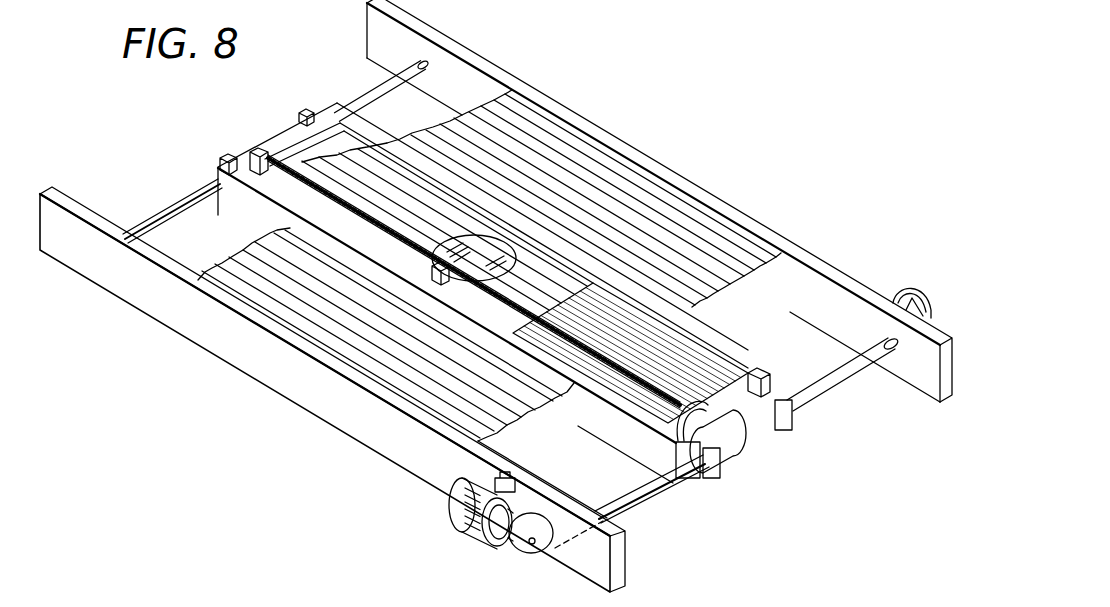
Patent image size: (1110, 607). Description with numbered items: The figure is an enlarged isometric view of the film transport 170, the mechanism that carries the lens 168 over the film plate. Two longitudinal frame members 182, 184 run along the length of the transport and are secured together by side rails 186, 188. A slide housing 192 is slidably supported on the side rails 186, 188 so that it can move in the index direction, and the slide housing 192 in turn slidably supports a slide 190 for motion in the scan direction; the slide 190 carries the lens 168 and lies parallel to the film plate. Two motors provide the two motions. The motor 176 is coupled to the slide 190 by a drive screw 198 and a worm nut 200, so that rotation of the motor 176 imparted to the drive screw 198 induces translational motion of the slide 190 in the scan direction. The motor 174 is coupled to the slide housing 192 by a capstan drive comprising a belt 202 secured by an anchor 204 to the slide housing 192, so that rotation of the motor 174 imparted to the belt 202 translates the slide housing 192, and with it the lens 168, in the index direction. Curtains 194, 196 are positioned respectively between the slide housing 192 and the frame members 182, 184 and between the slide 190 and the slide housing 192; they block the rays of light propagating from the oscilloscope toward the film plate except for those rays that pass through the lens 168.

The lens 168 is at (509, 262).
The film transport 170 is at (742, 134).
The motor 174 is at (470, 538).
The motor 176 is at (740, 447).
The longitudinal frame member 182 is at (153, 310).
The longitudinal frame member 184 is at (496, 64).
The side rail 186 is at (850, 377).
The side rail 188 is at (165, 207).
The slide 190 is at (446, 215).
The slide housing 192 is at (240, 210).
The curtain 194 is at (437, 132).
The curtain 196 is at (693, 348).
The drive screw 198 is at (512, 309).
The worm nut 200 is at (434, 262).
The belt 202 is at (588, 486).
The anchor 204 is at (760, 368).